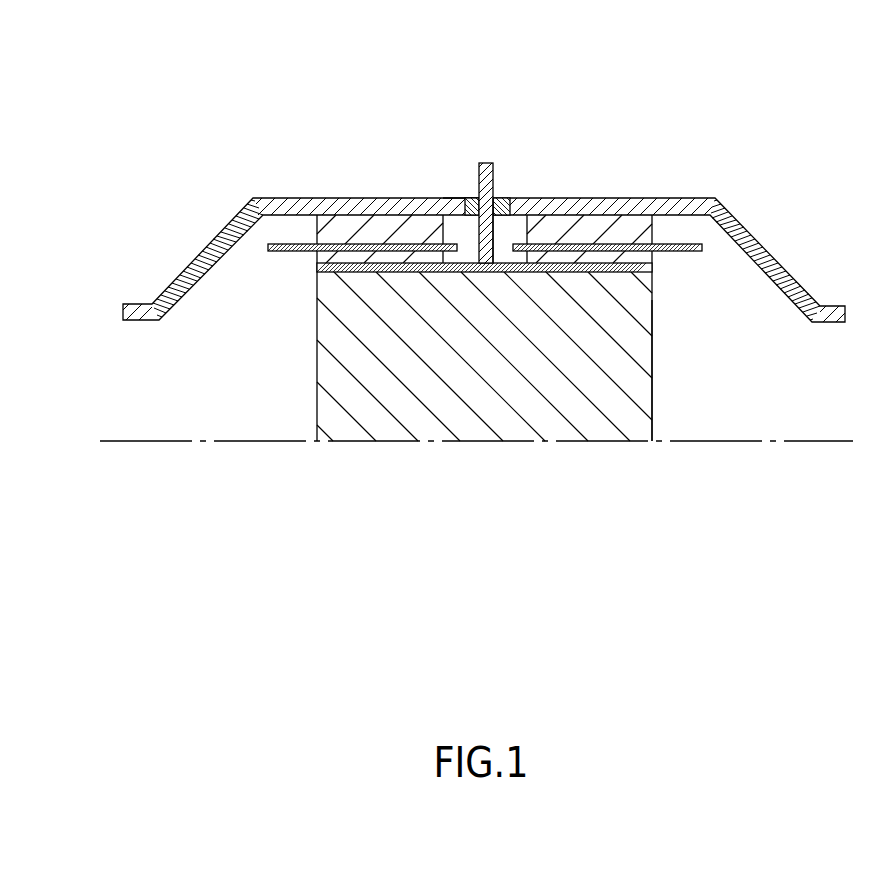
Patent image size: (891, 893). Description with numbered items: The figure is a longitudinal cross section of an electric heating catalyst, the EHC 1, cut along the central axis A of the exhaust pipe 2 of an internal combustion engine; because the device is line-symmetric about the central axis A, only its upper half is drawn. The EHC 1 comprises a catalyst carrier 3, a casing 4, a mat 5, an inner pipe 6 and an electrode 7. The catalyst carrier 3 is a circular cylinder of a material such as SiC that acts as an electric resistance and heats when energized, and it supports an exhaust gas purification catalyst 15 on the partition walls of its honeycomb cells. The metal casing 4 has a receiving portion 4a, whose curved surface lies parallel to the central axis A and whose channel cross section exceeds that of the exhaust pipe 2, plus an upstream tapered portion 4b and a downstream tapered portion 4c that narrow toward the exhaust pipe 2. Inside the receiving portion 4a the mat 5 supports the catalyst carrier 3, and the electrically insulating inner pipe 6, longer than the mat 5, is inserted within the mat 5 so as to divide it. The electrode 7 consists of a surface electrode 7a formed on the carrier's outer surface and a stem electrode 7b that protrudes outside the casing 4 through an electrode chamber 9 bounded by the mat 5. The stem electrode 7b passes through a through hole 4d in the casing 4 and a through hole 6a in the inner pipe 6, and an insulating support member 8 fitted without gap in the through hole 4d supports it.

The electric heating catalyst 1 is at (820, 78).
The exhaust pipe 2 is at (130, 303).
The catalyst carrier 3 is at (318, 370).
The casing 4 is at (343, 198).
The receiving portion 4a is at (635, 198).
The tapered portion 4b is at (208, 247).
The tapered portion 4c is at (768, 250).
The through hole 4d is at (468, 238).
The mat 5 is at (628, 260).
The inner pipe 6 is at (300, 249).
The through hole 6a is at (510, 247).
The electrode 7 is at (488, 163).
The surface electrode 7a is at (357, 264).
The stem electrode 7b is at (500, 200).
The support member 8 is at (505, 198).
The electrode chamber 9 is at (452, 198).
The exhaust gas purification catalyst 15 is at (633, 372).
The central axis A is at (767, 442).